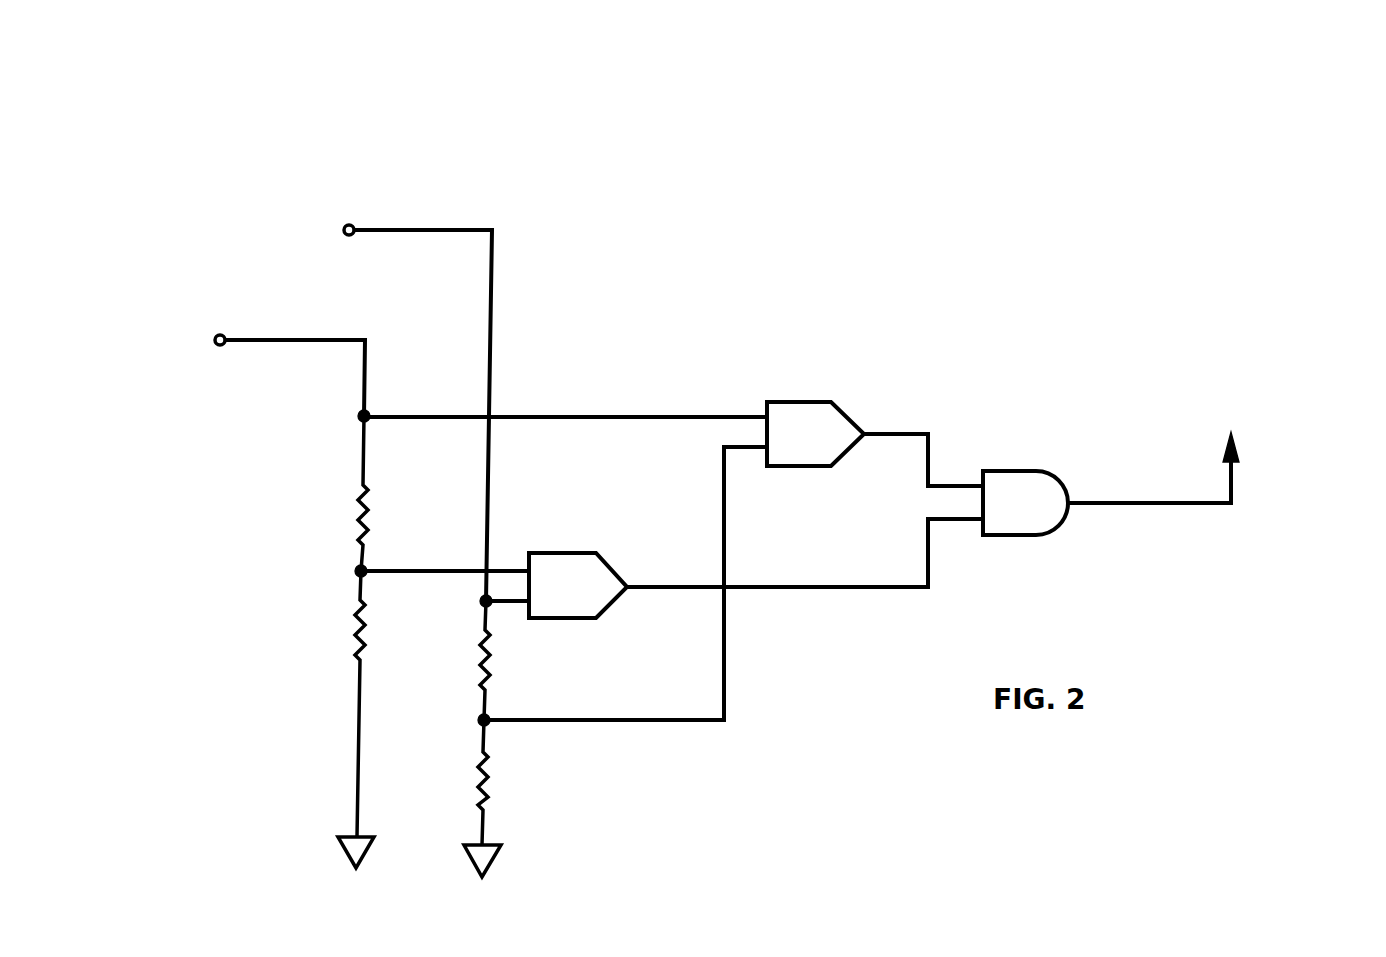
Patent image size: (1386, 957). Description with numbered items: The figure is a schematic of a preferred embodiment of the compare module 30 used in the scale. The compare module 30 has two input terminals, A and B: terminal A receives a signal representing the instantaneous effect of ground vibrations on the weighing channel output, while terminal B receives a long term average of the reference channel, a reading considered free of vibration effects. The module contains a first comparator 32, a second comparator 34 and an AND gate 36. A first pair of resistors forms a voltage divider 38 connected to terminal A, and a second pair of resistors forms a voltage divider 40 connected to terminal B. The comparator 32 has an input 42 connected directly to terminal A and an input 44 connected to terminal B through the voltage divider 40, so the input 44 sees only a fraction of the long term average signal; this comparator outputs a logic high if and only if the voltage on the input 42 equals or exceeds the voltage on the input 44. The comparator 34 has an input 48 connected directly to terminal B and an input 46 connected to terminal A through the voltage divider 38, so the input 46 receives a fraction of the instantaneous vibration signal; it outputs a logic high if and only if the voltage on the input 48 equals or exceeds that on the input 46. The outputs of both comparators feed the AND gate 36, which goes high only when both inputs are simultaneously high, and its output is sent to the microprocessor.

The compare module 30 is at (278, 91).
The comparator 32 is at (805, 401).
The comparator 34 is at (568, 554).
The AND gate 36 is at (1000, 471).
The voltage divider 38 is at (228, 490).
The voltage divider 40 is at (561, 769).
The input 42 is at (755, 416).
The input 44 is at (748, 450).
The input 46 is at (523, 571).
The input 48 is at (519, 603).